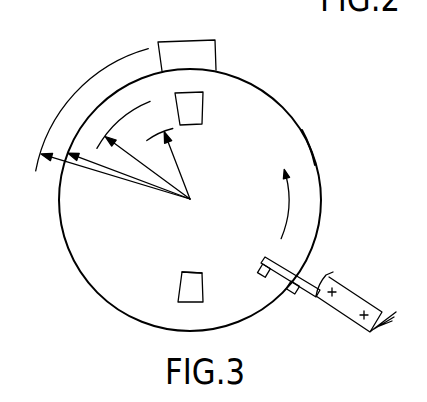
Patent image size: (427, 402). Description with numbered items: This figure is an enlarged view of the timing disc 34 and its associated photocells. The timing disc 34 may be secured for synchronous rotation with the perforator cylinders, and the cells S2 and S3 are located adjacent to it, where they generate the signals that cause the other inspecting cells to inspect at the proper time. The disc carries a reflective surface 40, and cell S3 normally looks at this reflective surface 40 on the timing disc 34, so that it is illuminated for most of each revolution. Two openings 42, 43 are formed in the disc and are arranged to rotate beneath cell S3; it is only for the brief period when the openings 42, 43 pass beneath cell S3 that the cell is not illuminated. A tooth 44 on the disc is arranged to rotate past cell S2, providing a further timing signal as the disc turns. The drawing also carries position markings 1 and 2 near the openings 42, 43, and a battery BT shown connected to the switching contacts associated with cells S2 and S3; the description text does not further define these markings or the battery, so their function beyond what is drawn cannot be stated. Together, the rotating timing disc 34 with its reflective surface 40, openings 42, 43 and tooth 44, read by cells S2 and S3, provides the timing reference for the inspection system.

The reflective surface 40 is at (259, 91).
The timing disc 34 is at (300, 136).
The tooth 44 is at (201, 31).
The opening 42 is at (192, 103).
The opening 43 is at (192, 273).
The first sector position 1 is at (175, 99).
The second sector position 2 is at (174, 285).
The photocell S3 is at (262, 258).
The photocell S2 is at (292, 295).
The battery BT is at (371, 337).